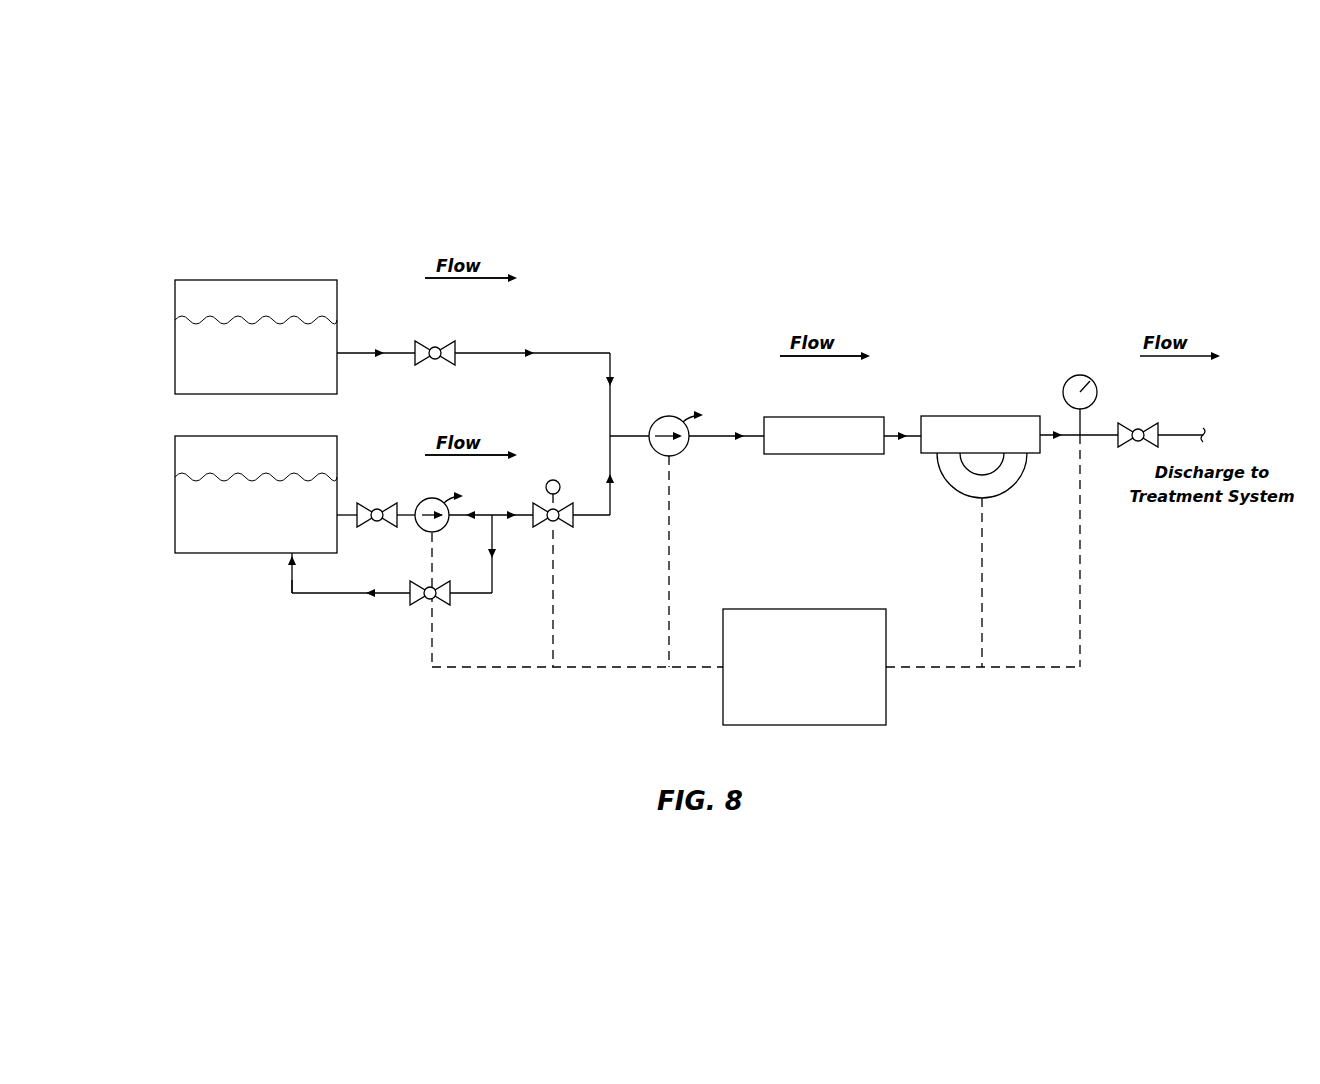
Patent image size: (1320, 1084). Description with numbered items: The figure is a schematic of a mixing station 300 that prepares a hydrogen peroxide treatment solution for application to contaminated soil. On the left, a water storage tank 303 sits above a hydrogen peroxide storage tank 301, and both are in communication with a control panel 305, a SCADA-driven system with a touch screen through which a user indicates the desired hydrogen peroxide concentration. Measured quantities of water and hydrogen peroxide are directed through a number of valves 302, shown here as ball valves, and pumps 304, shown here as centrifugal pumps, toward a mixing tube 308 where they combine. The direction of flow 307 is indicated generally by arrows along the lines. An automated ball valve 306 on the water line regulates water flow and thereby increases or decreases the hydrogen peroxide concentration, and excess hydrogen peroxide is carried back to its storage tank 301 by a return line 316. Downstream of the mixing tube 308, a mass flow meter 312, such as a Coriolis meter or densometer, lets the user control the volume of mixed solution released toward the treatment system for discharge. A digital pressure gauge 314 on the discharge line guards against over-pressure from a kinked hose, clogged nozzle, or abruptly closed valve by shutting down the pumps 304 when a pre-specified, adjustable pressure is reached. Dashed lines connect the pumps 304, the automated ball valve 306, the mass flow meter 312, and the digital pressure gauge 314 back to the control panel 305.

The mixing station 300 is at (930, 234).
The hydrogen peroxide storage tank 301 is at (188, 538).
The valve 302 is at (440, 348).
The water storage tank 303 is at (188, 345).
The pump 304 is at (665, 417).
The control panel 305 is at (878, 706).
The automated ball valve 306 is at (558, 528).
The flow 307 is at (458, 246).
The mixing tube 308 is at (790, 455).
The mass flow meter 312 is at (970, 435).
The digital pressure gauge 314 is at (1068, 375).
The return line 316 is at (300, 610).